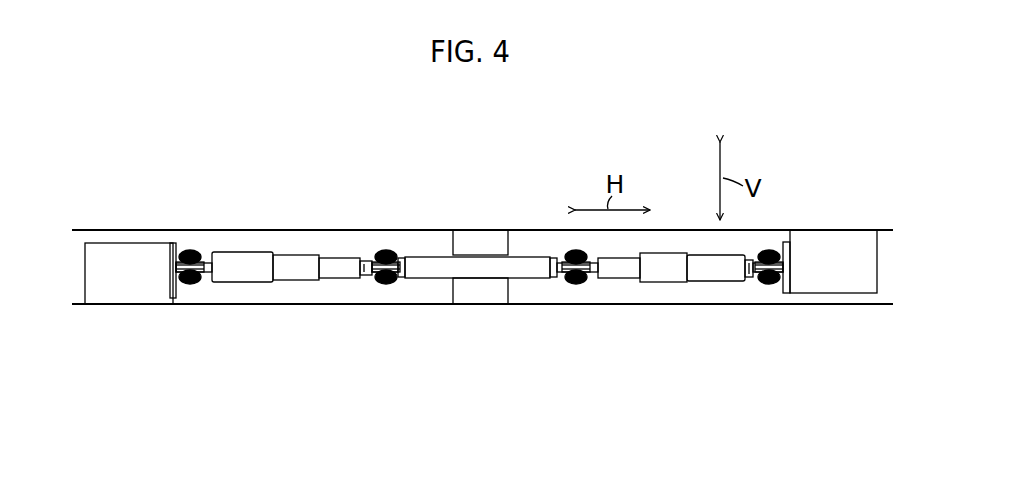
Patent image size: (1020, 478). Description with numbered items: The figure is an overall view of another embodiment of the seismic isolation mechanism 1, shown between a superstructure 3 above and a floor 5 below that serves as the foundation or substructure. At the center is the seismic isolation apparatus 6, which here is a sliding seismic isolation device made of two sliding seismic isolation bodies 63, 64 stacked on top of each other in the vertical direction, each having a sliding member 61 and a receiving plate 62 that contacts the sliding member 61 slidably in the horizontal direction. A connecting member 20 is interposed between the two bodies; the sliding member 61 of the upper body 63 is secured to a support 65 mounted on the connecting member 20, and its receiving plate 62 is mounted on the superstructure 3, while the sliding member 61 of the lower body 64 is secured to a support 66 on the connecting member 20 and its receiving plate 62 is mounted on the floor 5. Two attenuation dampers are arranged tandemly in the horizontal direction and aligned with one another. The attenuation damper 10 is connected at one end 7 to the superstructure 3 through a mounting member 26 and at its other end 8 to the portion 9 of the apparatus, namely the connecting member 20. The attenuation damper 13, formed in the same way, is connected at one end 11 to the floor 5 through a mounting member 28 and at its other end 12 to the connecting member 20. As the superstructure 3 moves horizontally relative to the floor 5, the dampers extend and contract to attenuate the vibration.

The seismic isolation mechanism 1 is at (278, 240).
The superstructure 3 is at (350, 240).
The floor 5 is at (261, 298).
The seismic isolation apparatus 6 is at (476, 267).
The one end 7 is at (767, 283).
The other end 8 is at (576, 283).
The portion 9 is at (418, 272).
The attenuation damper 10 is at (670, 251).
The one end 11 is at (200, 283).
The other end 12 is at (378, 283).
The attenuation damper 13 is at (297, 251).
The connecting member 20 is at (476, 279).
The mounting member 26 is at (850, 277).
The mounting member 28 is at (112, 285).
The sliding member 61 is at (492, 243).
The receiving plate 62 is at (510, 240).
The sliding seismic isolation body 63 is at (462, 240).
The sliding seismic isolation body 64 is at (462, 290).
The support 65 is at (498, 232).
The support 66 is at (502, 303).